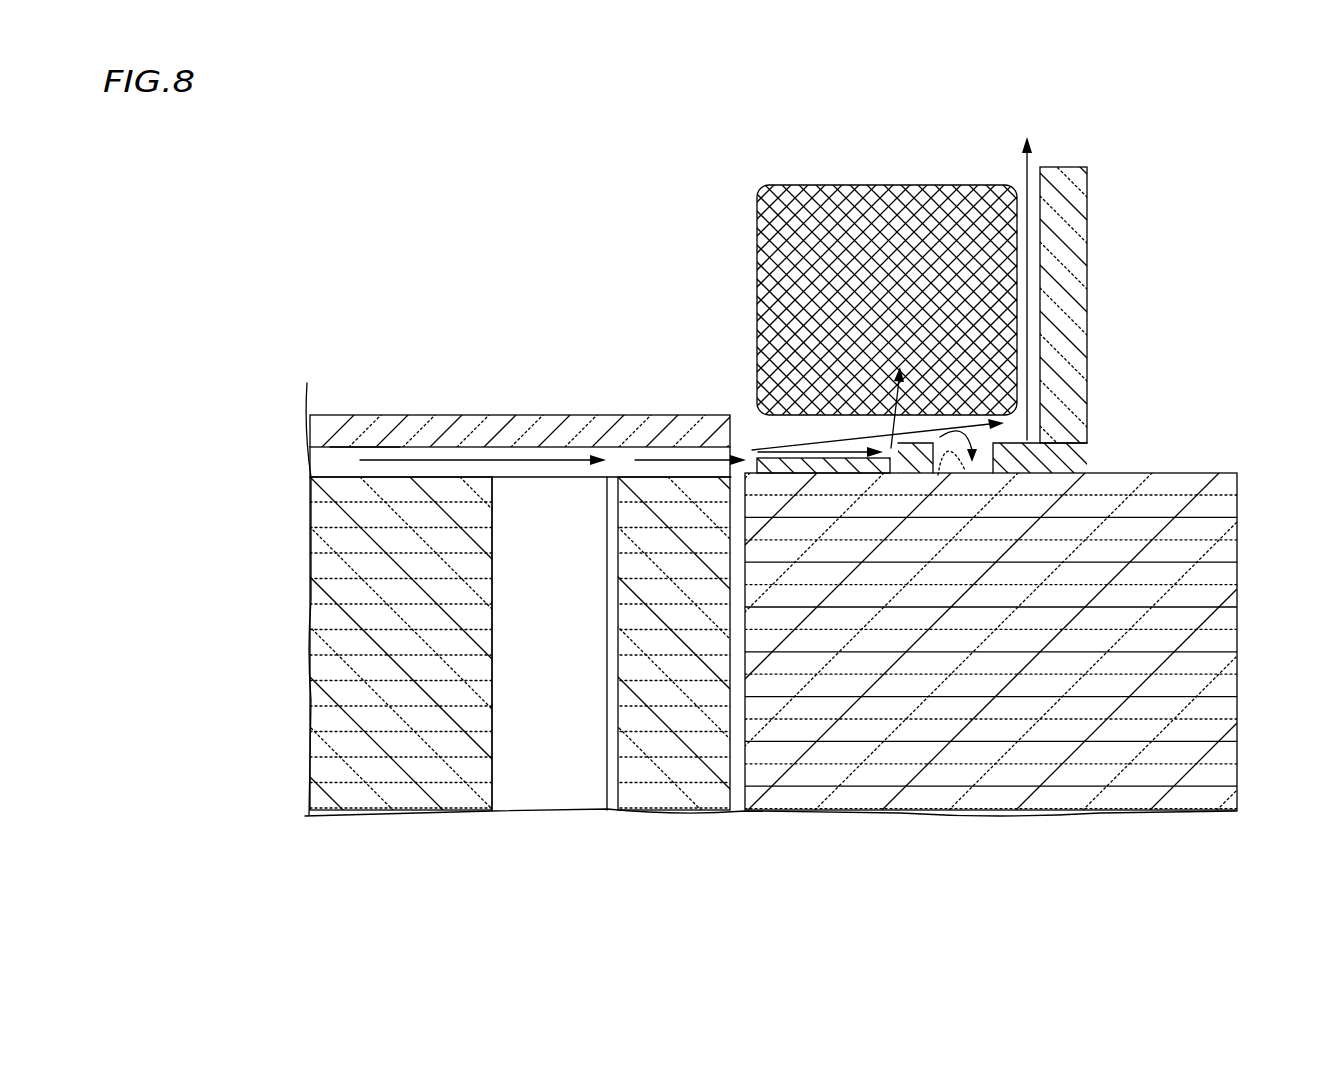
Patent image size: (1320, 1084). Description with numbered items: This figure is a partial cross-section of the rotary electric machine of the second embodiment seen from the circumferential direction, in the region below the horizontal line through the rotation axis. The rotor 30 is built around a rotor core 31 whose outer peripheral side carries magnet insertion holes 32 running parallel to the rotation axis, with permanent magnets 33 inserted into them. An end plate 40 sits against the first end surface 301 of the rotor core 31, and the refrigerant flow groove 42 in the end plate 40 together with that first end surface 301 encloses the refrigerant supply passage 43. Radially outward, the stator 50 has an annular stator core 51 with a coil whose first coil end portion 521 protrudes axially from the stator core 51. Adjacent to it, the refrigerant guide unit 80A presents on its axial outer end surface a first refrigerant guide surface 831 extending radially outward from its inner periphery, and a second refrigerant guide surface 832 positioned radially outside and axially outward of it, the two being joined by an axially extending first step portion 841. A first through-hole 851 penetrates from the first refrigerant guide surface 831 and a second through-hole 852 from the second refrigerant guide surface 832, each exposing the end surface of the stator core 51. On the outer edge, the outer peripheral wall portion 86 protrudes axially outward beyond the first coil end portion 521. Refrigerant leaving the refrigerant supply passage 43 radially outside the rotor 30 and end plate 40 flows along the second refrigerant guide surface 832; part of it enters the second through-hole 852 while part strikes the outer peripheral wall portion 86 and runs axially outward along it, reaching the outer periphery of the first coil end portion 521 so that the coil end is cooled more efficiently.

The rotor 30 is at (618, 661).
The rotor core 31 is at (325, 660).
The magnet insertion holes 32 is at (612, 812).
The permanent magnets 33 is at (545, 795).
The end plate 40 is at (500, 413).
The refrigerant flow groove 42 is at (323, 456).
The refrigerant supply passage 43 is at (355, 445).
The stator 50 is at (866, 710).
The stator core 51 is at (1150, 662).
The outer peripheral wall portion 86 is at (1088, 322).
The refrigerant guide unit 80A is at (1066, 150).
The first end surface of the rotor core 301 is at (325, 470).
The first coil end portion 521 is at (857, 185).
The first refrigerant guide surface 831 is at (760, 448).
The second refrigerant guide surface 832 is at (948, 478).
The first step portion 841 is at (893, 476).
The first through-hole 851 is at (833, 478).
The second through-hole 852 is at (990, 457).